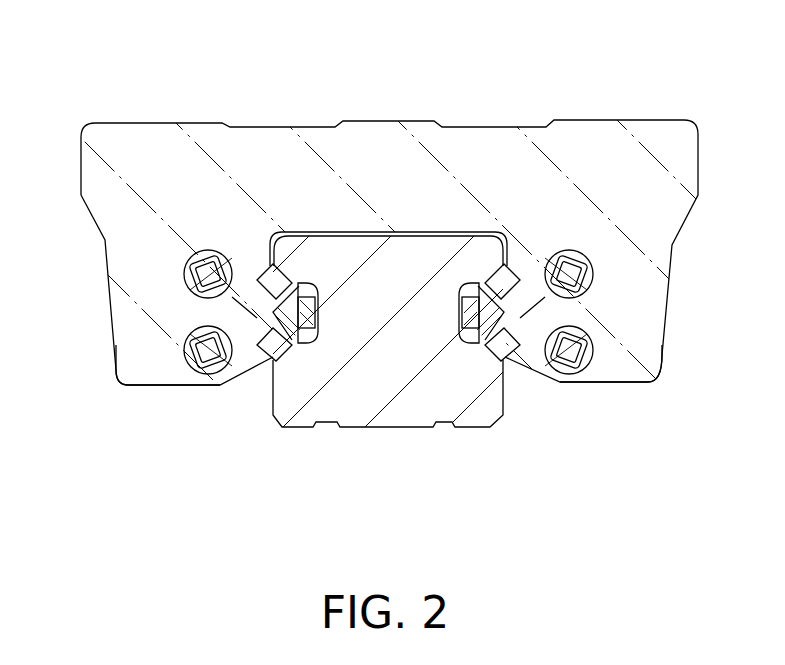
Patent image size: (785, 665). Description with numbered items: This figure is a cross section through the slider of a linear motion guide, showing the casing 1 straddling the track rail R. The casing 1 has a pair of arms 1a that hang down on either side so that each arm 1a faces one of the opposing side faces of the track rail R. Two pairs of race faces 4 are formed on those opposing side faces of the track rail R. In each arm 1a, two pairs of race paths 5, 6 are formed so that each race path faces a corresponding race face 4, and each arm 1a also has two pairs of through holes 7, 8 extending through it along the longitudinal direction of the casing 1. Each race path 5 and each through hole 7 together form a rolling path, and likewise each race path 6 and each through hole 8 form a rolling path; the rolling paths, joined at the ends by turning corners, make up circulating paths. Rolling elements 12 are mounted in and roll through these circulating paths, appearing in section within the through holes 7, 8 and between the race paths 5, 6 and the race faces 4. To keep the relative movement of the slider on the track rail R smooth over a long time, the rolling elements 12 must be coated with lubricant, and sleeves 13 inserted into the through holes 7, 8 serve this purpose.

The casing 1 is at (663, 127).
The arms 1a is at (168, 378).
The race faces 4 is at (297, 283).
The race paths 5 is at (273, 265).
The race paths 6 is at (272, 359).
The through holes 7 is at (186, 351).
The through holes 8 is at (185, 272).
The rolling elements 12 is at (205, 272).
The sleeves 13 is at (188, 330).
The track rail R is at (405, 413).